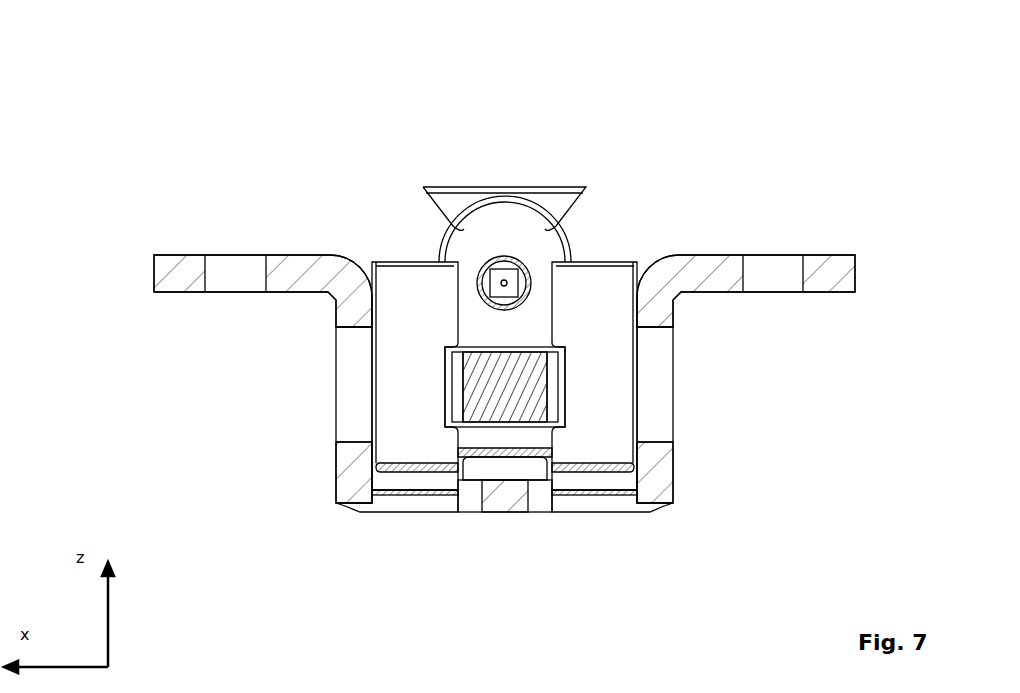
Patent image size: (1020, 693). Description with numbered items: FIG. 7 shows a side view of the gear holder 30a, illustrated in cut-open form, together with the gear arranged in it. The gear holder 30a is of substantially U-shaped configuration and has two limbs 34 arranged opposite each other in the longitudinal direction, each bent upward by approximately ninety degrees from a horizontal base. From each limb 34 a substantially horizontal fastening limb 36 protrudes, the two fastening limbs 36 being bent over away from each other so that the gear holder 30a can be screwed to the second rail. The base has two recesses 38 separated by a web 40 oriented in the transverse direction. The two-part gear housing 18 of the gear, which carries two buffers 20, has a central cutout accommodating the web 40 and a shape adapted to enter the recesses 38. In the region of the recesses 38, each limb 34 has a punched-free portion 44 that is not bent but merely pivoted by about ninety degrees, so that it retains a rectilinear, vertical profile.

The gear holder 30a is at (222, 83).
The gear housing 18 is at (525, 237).
The buffers 20 is at (418, 287).
The limbs 34 is at (348, 381).
The fastening limbs 36 is at (167, 278).
The recesses 38 is at (412, 503).
The web 40 is at (508, 503).
The portion 44 is at (348, 490).